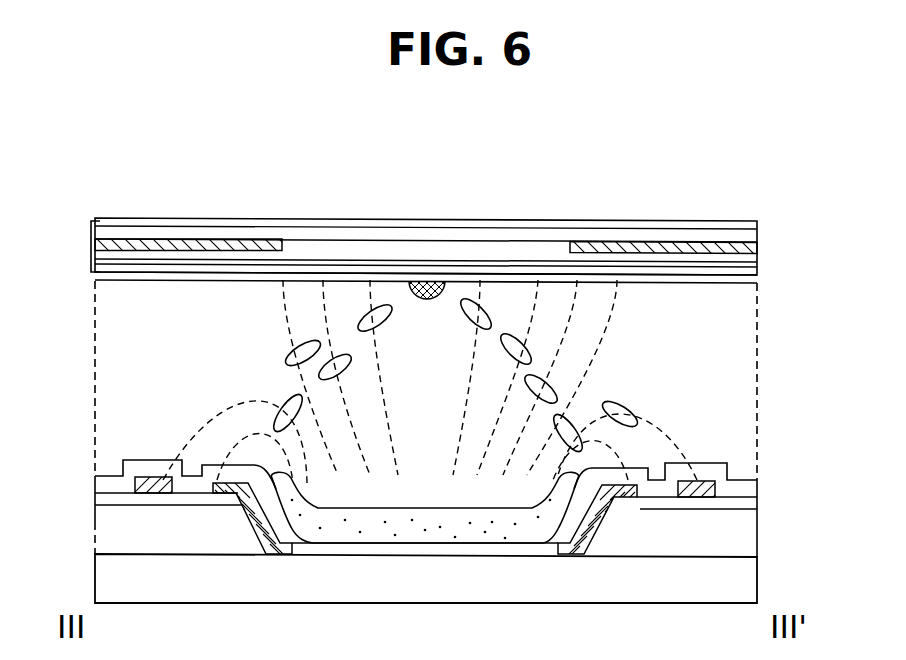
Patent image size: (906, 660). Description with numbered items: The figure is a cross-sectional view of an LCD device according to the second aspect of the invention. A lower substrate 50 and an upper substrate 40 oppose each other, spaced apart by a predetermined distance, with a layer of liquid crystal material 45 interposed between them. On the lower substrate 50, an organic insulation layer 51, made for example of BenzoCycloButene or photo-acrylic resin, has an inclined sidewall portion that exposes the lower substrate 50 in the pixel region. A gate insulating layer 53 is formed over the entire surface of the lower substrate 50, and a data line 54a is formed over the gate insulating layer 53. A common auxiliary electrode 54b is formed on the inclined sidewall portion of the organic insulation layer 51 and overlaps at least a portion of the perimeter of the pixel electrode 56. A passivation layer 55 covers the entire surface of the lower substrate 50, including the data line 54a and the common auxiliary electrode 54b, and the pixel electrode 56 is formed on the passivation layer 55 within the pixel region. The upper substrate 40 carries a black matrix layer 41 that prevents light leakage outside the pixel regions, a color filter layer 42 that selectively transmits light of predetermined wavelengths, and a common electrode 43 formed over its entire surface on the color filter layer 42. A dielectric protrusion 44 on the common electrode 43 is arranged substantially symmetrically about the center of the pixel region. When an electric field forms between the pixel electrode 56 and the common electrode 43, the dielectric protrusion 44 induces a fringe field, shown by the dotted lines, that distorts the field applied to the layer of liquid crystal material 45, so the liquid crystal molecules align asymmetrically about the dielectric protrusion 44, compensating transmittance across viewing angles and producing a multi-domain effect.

The upper substrate 40 is at (91, 228).
The black matrix layer 41 is at (758, 244).
The color filter layer 42 is at (758, 265).
The common electrode 43 is at (92, 270).
The dielectric protrusion 44 is at (428, 300).
The layer of liquid crystal material 45 is at (757, 395).
The lower substrate 50 is at (757, 578).
The organic insulation layer 51 is at (757, 536).
The gate insulating layer 53 is at (757, 505).
The data line 54a is at (160, 478).
The common auxiliary electrode 54b is at (281, 555).
The passivation layer 55 is at (413, 548).
The pixel electrode 56 is at (495, 537).